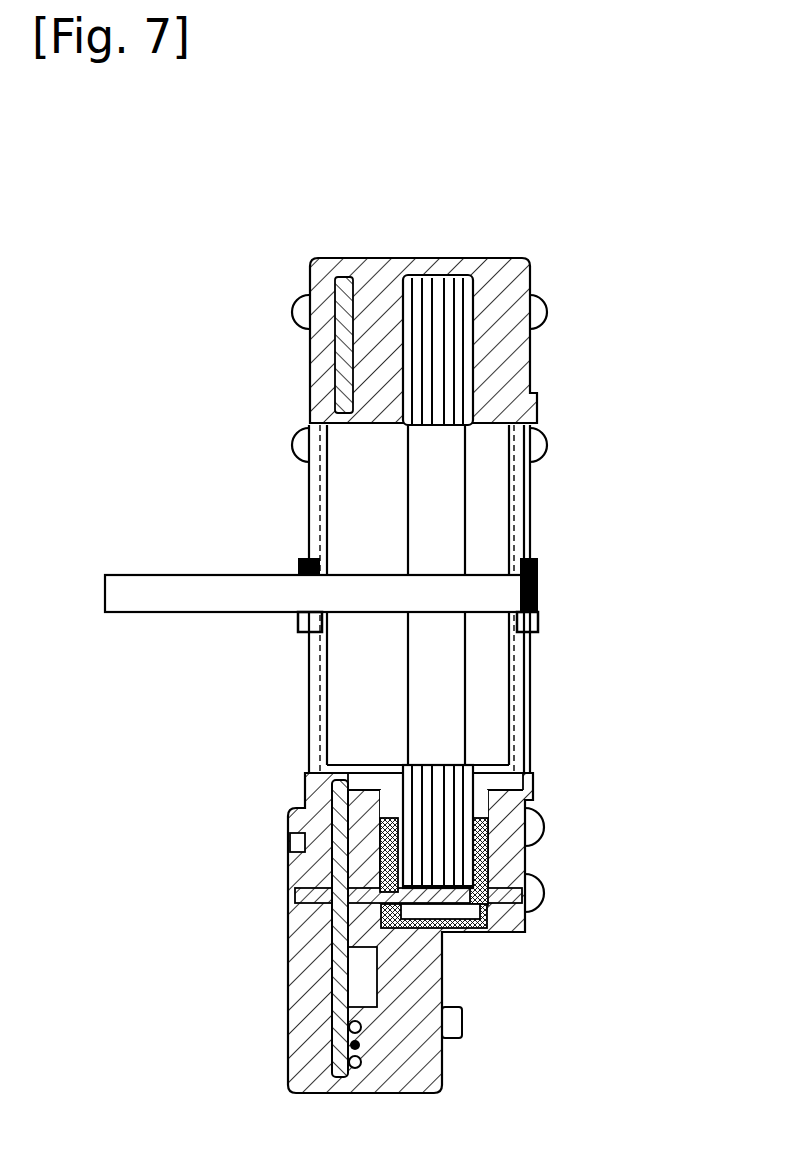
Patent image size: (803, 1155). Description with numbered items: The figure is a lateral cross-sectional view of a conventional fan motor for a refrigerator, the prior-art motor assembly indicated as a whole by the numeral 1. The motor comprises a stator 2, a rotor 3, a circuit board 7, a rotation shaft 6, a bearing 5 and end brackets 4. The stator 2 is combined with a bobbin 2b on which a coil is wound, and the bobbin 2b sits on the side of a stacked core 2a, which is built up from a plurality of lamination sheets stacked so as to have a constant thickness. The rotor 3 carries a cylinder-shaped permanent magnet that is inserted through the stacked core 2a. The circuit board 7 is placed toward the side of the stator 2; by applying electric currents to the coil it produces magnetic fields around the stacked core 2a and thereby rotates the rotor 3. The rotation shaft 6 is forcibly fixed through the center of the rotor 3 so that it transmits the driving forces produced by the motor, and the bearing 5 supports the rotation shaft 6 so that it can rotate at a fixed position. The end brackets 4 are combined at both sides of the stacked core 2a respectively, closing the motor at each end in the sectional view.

The sensor assembly 1 is at (548, 257).
The stator 2 is at (500, 362).
The stacked core 2a is at (437, 283).
The bobbin 2b is at (490, 858).
The rotor 3 is at (453, 712).
The end brackets 4 is at (520, 485).
The bearing 5 is at (300, 565).
The rotation shaft 6 is at (185, 598).
The circuit board 7 is at (350, 935).